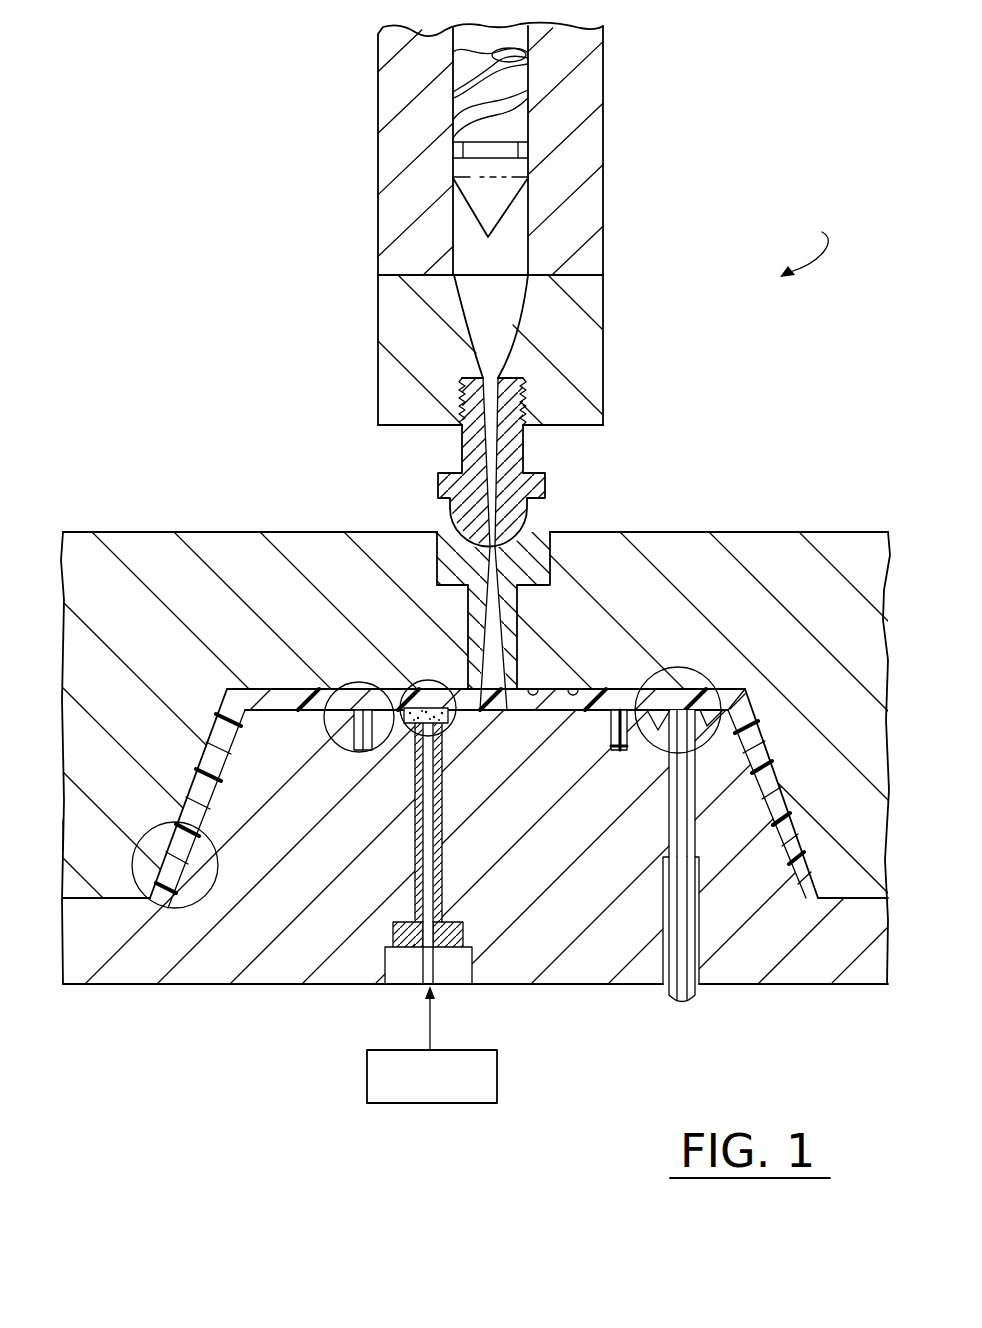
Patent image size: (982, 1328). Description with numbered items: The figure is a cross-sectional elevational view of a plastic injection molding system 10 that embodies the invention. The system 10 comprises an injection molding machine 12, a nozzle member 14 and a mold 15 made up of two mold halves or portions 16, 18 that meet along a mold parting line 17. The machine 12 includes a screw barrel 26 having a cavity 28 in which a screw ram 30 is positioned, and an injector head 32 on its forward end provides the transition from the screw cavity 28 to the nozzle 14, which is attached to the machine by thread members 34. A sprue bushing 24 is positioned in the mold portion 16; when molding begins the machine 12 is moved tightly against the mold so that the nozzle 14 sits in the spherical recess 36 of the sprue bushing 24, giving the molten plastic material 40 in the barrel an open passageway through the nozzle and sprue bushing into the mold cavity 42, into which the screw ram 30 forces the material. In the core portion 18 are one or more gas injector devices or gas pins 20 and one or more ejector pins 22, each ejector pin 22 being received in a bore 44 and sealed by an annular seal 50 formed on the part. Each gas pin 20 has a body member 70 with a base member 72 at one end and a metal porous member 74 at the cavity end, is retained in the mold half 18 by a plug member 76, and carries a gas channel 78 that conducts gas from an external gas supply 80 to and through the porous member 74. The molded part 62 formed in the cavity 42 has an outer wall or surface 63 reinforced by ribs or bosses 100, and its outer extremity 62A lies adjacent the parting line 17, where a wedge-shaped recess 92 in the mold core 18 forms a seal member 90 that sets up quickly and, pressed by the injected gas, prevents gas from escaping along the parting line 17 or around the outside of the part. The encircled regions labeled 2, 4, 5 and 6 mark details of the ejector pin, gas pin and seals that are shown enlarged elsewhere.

The plastic injection molding system 10 is at (804, 249).
The injection molding machine 12 is at (378, 243).
The nozzle member 14 is at (437, 478).
The mold 15 is at (92, 830).
The mold half or portion 16 is at (190, 534).
The mold parting line 17 is at (115, 898).
The mold half or portion 18 is at (210, 982).
The gas injector device 20 is at (446, 812).
The ejector pin 22 is at (670, 798).
The sprue bushing 24 is at (470, 607).
The screw barrel 26 is at (382, 105).
The screw cavity 28 is at (533, 239).
The screw ram 30 is at (525, 125).
The injector head 32 is at (378, 352).
The thread members 34 is at (462, 385).
The spherical recess 36 is at (437, 548).
The plastic material 40 is at (517, 330).
The mold cavity 42 is at (580, 690).
The bore 44 is at (672, 918).
The annular seal 50 is at (760, 715).
The molded part 62 is at (228, 695).
The outer end or extremity of the molded part 62A is at (160, 882).
The outer wall or surface of the molded part 63 is at (535, 690).
The body member 70 is at (452, 862).
The base member 72 is at (395, 922).
The metal porous member 74 is at (458, 722).
The plug member 76 is at (478, 962).
The gas channel or conduit 78 is at (415, 808).
The gas supply 80 is at (367, 1060).
The seal member 90 is at (178, 824).
The wedge-shaped recess 92 is at (220, 866).
The ribs or bosses 100 is at (354, 739).
The detail circle FIG. 2 is at (350, 690).
The detail circle FIG. 4 is at (693, 680).
The detail circle FIG. 5 is at (422, 690).
The detail circle FIG. 6 is at (200, 858).